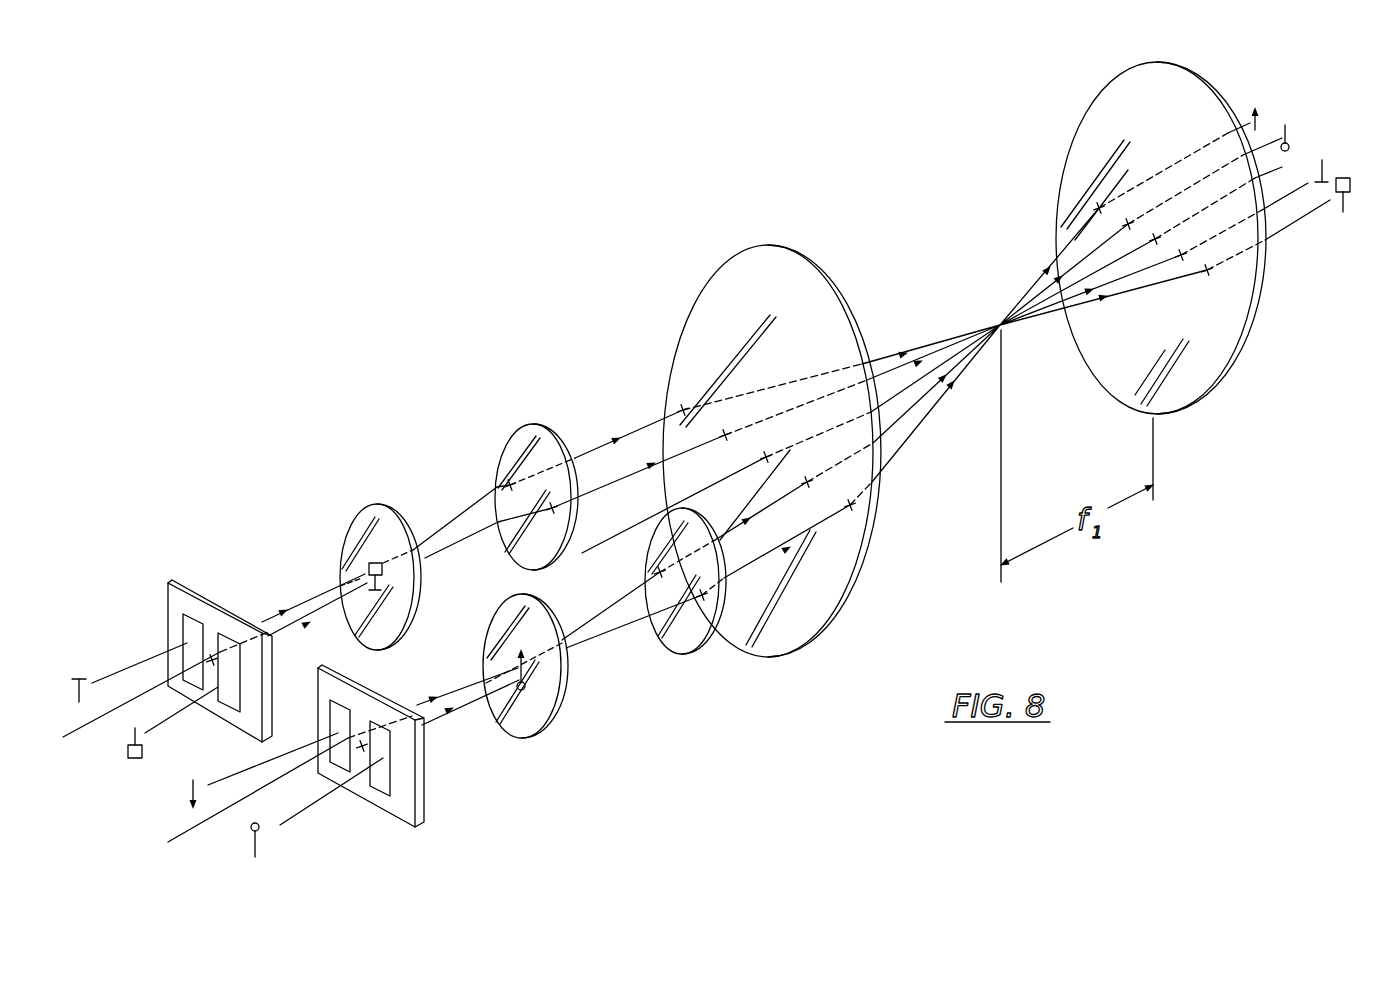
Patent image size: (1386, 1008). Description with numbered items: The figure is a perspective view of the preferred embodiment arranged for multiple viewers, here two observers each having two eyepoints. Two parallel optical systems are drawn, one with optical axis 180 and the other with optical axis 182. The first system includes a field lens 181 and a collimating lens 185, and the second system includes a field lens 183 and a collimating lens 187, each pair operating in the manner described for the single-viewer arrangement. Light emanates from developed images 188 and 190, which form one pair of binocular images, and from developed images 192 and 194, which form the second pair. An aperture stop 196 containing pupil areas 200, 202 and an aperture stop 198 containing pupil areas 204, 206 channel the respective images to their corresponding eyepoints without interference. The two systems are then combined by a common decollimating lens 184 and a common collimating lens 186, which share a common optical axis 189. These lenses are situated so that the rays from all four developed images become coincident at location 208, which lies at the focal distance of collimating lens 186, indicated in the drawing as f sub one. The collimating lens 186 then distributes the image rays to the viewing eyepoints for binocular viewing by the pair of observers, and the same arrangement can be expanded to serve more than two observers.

The optical axis 180 is at (87, 728).
The field lens 181 is at (385, 503).
The optical axis 182 is at (193, 833).
The field lens 183 is at (550, 727).
The common decollimating lens 184 is at (735, 247).
The collimating lens 185 is at (528, 425).
The common collimating lens 186 is at (1178, 413).
The collimating lens 187 is at (692, 655).
The developed image 188 is at (80, 679).
The common optical axis 189 is at (607, 543).
The developed image 190 is at (145, 750).
The developed image 192 is at (187, 790).
The developed image 194 is at (258, 845).
The aperture stop 196 is at (199, 603).
The aperture stop 198 is at (407, 820).
The pupil area 200 is at (203, 612).
The pupil area 202 is at (222, 636).
The pupil area 204 is at (338, 708).
The pupil area 206 is at (386, 774).
The location 208 is at (1001, 322).